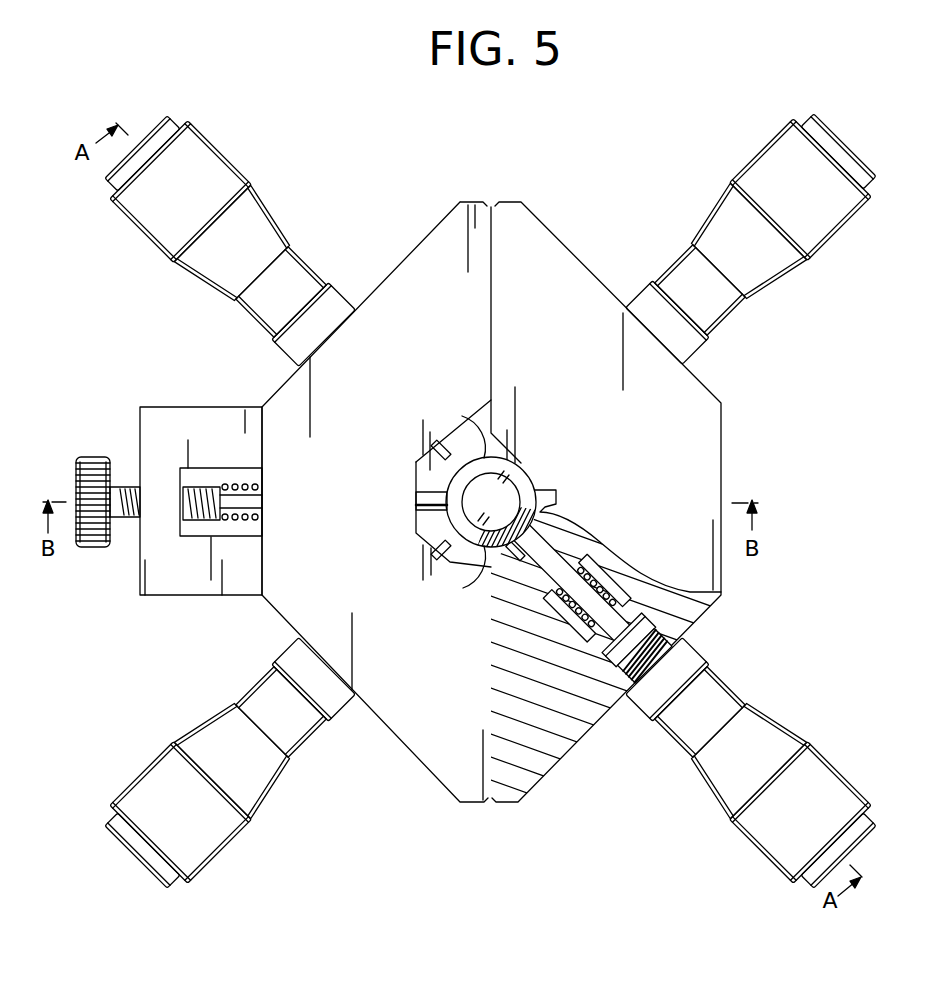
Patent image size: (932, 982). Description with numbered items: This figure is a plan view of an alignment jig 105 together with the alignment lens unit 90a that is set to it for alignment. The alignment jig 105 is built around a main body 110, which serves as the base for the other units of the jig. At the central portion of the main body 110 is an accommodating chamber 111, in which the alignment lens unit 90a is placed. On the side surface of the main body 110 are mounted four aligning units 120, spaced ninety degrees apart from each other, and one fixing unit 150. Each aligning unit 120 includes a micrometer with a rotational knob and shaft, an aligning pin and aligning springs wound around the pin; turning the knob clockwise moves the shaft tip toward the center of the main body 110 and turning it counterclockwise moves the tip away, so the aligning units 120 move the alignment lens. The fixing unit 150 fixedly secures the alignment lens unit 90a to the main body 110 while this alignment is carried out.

The alignment jig 105 is at (536, 495).
The main body 110 is at (722, 450).
The accommodating chamber 111 is at (472, 565).
The alignment lens unit 90a is at (462, 418).
The aligning unit 120 is at (212, 172).
The fixing unit 150 is at (140, 425).